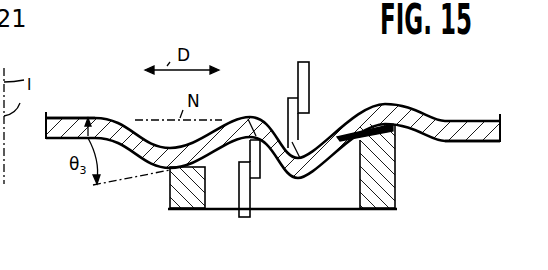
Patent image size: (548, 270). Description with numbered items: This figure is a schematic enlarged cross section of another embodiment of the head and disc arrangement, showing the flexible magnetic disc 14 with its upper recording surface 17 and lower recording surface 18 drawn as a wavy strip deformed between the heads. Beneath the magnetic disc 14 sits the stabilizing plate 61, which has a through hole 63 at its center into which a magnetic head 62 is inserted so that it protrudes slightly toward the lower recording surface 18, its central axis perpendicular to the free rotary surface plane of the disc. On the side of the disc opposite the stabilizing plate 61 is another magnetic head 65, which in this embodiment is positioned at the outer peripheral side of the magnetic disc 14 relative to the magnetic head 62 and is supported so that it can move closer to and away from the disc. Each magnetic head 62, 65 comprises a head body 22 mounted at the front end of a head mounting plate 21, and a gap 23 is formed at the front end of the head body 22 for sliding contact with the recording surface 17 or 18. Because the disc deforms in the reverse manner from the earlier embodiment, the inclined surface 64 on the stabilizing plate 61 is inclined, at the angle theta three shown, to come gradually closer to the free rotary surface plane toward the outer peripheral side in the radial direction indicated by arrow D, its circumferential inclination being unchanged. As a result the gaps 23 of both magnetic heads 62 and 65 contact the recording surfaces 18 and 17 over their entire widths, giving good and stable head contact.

The magnetic disc 14 is at (460, 110).
The recording surface 17 is at (58, 117).
The recording surface 18 is at (437, 142).
The head mounting plate 21 is at (246, 213).
The head body 22 is at (262, 166).
The gap 23 is at (255, 135).
The stabilizing plate 61 is at (399, 198).
The magnetic head 62 is at (243, 224).
The through hole 63 is at (343, 195).
The inclined surface 64 is at (363, 124).
The magnetic head 65 is at (313, 76).